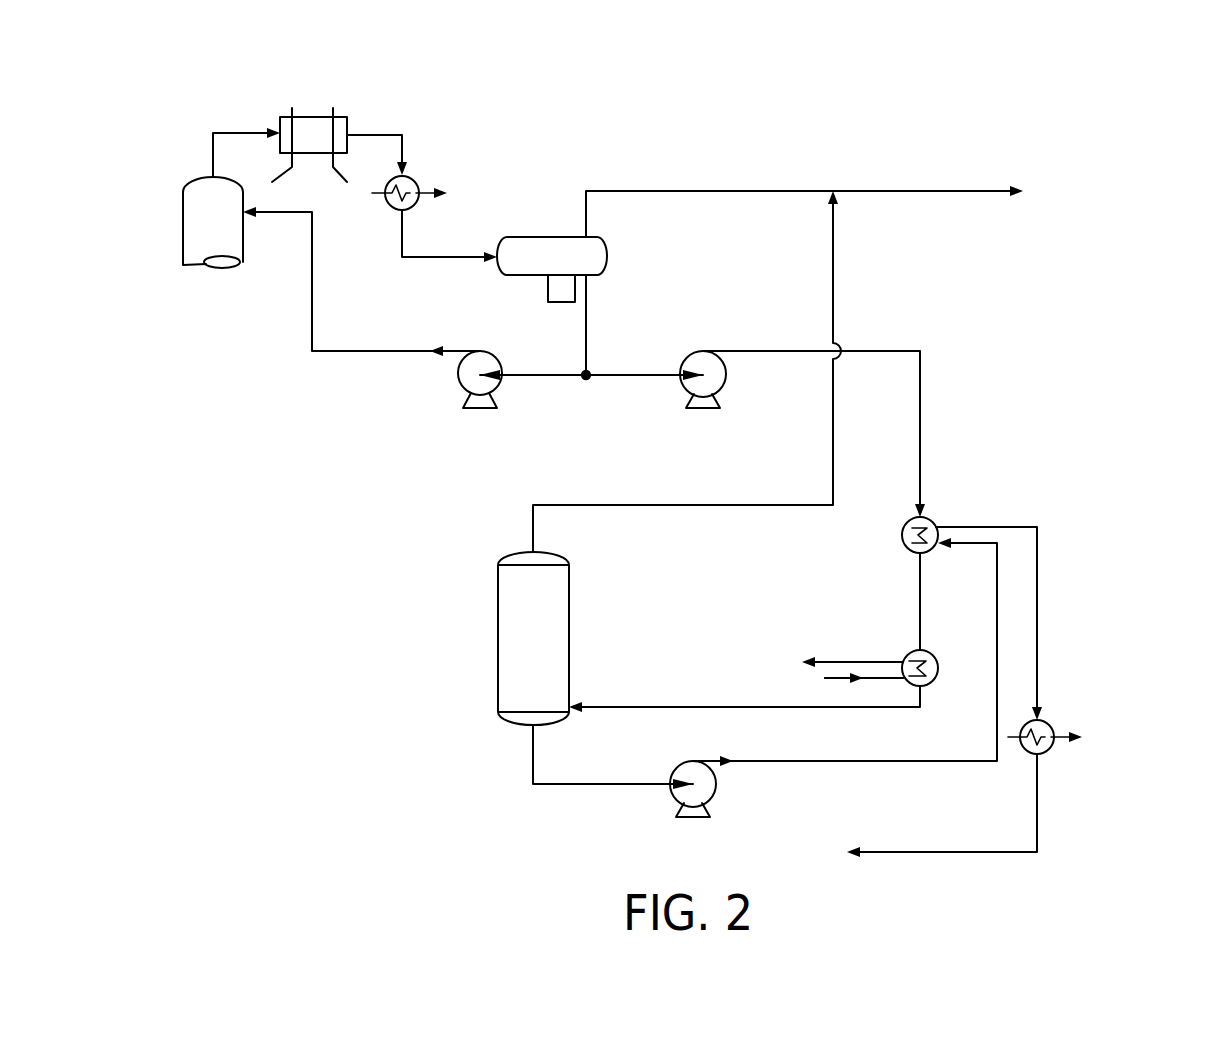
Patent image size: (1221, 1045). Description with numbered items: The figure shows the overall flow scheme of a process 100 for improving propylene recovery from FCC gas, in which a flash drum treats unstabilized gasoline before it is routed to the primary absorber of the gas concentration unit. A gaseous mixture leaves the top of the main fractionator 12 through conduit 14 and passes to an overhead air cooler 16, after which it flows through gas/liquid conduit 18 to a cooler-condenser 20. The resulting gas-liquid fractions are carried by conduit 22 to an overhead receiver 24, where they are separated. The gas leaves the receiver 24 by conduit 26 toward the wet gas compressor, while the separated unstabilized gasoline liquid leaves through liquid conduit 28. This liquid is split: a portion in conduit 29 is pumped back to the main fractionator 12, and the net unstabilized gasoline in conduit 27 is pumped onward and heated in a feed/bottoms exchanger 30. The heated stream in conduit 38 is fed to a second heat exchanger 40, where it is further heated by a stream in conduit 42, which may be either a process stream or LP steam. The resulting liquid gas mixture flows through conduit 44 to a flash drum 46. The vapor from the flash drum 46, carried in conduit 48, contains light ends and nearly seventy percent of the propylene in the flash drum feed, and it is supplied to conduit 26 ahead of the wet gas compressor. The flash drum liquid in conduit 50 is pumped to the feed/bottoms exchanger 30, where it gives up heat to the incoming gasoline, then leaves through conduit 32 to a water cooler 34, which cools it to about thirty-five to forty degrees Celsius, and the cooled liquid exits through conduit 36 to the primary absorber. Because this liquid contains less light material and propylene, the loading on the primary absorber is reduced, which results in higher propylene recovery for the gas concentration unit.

The process 100 is at (1140, 156).
The main fractionator 12 is at (183, 228).
The conduit 14 is at (244, 124).
The overhead air cooler 16 is at (314, 112).
The gas/liquid conduit 18 is at (383, 125).
The cooler-condenser 20 is at (415, 178).
The cooled feed line 22 is at (402, 233).
The overhead receiver 24 is at (553, 232).
The conduit 26 is at (750, 187).
The conduit 27 is at (633, 378).
The liquid conduit 28 is at (586, 307).
The conduit 29 is at (544, 378).
The feed/bottoms exchanger 30 is at (932, 520).
The exchanger outlet line 32 is at (1037, 626).
The water cooler 34 is at (1048, 723).
The product line 36 is at (943, 855).
The conduit 38 is at (920, 601).
The heat exchanger 40 is at (932, 652).
The conduit 42 is at (878, 680).
The conduit 44 is at (628, 712).
The flash drum 46 is at (498, 638).
The conduit 48 is at (683, 505).
The conduit 50 is at (605, 786).